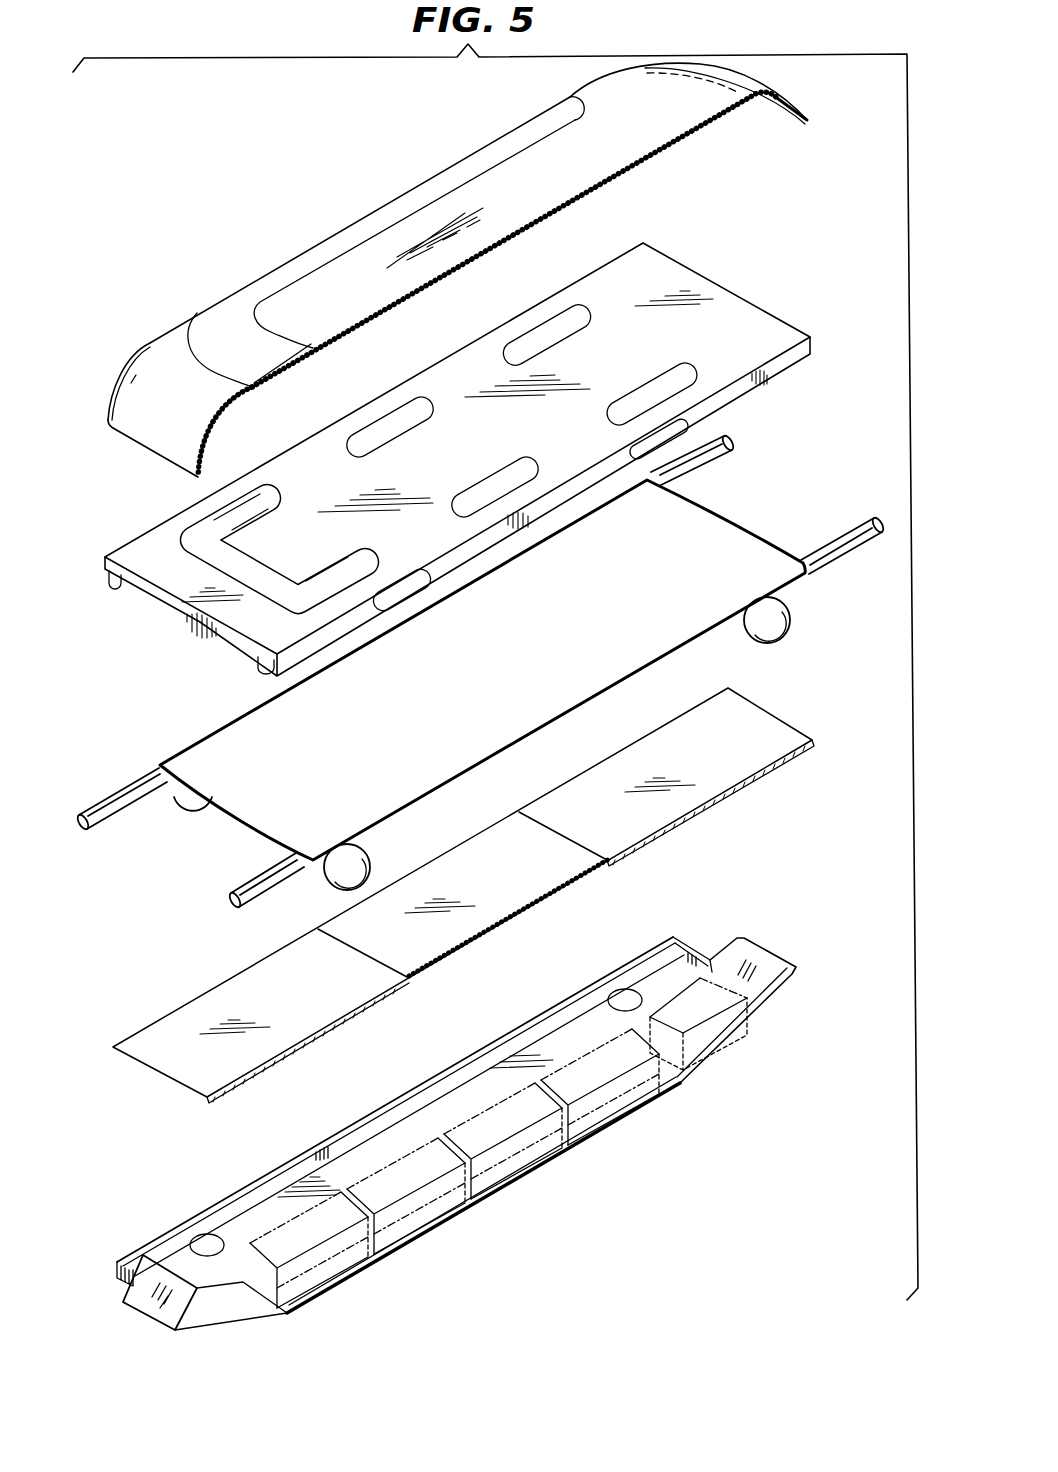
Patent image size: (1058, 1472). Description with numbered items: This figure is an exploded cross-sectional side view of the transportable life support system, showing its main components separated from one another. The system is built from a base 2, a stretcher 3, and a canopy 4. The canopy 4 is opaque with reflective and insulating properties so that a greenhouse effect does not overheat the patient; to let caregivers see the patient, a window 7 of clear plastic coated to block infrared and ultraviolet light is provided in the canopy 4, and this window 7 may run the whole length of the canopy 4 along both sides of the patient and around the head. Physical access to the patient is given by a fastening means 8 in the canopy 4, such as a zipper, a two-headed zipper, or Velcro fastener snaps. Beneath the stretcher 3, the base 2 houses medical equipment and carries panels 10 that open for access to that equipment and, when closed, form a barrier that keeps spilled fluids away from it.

The base 2 is at (143, 1290).
The stretcher 3 is at (863, 522).
The canopy 4 is at (303, 267).
The window 7 is at (150, 343).
The fastening means 8 is at (708, 548).
The panels 10 is at (314, 1032).